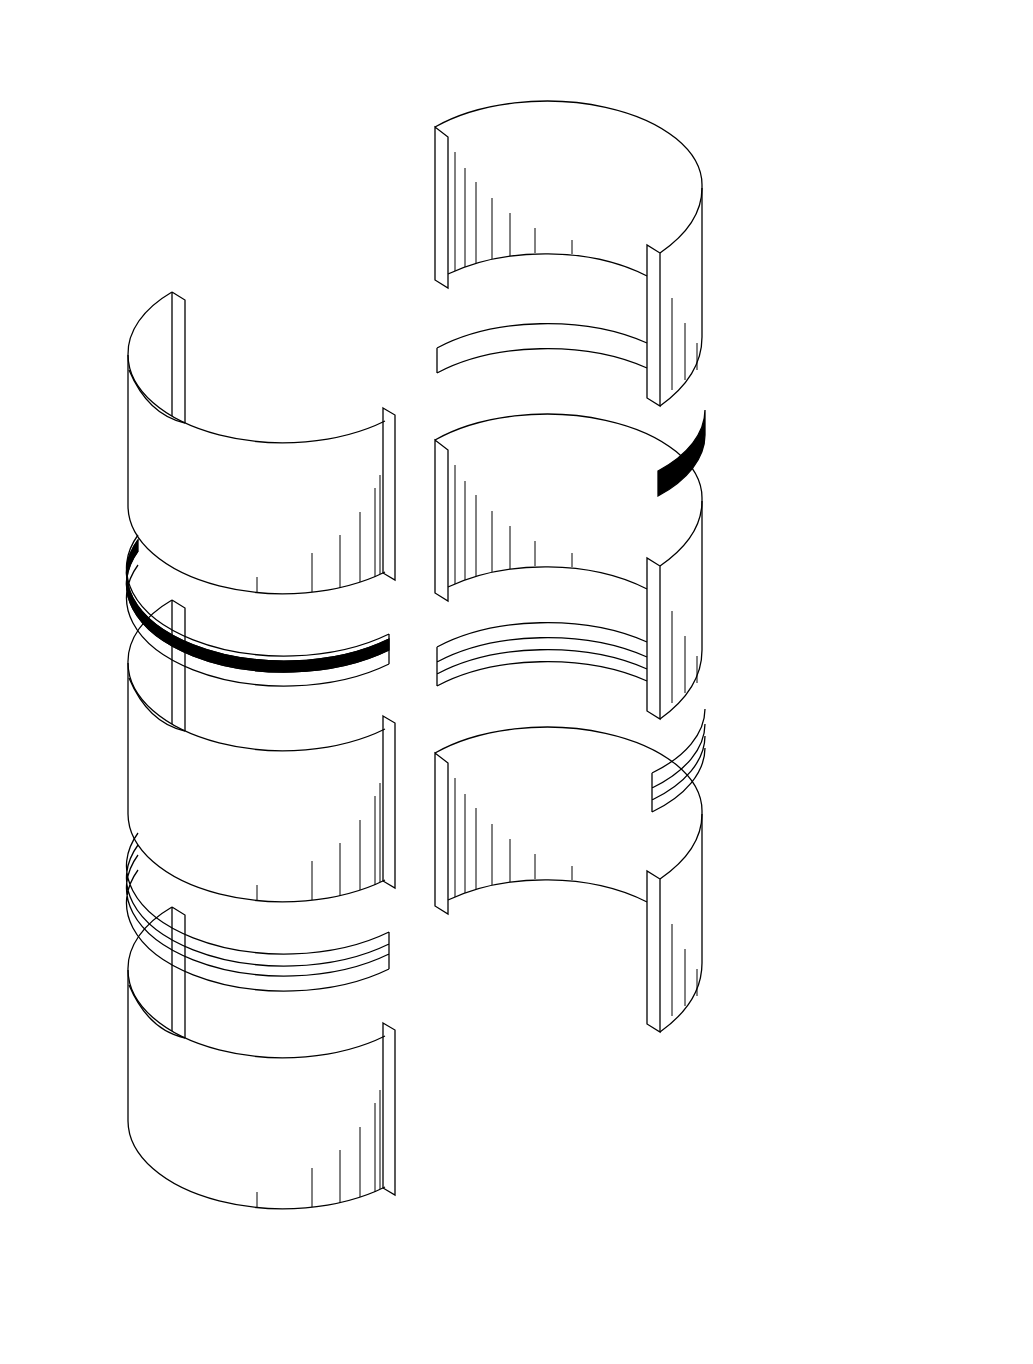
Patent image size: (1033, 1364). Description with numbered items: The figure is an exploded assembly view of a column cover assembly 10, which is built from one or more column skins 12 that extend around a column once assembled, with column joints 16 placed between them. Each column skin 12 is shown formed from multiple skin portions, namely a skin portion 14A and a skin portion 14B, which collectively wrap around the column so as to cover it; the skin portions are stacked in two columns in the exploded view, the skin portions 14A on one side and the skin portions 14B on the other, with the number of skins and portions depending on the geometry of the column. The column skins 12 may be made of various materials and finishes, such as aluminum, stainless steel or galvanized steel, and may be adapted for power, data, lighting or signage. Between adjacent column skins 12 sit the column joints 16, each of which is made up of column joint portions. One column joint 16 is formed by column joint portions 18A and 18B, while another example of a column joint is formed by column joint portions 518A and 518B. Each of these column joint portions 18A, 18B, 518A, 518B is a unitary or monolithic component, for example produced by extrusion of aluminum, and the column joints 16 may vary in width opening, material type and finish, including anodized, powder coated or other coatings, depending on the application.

The column cover assembly 10 is at (770, 33).
The column skin 12 is at (654, 137).
The skin portion 14A is at (701, 182).
The skin portion 14B is at (132, 428).
The column joint 16 is at (622, 574).
The column joint portion 18A is at (703, 390).
The column joint portion 18B is at (124, 583).
The column joint portion 518A is at (703, 758).
The column joint portion 518B is at (130, 897).